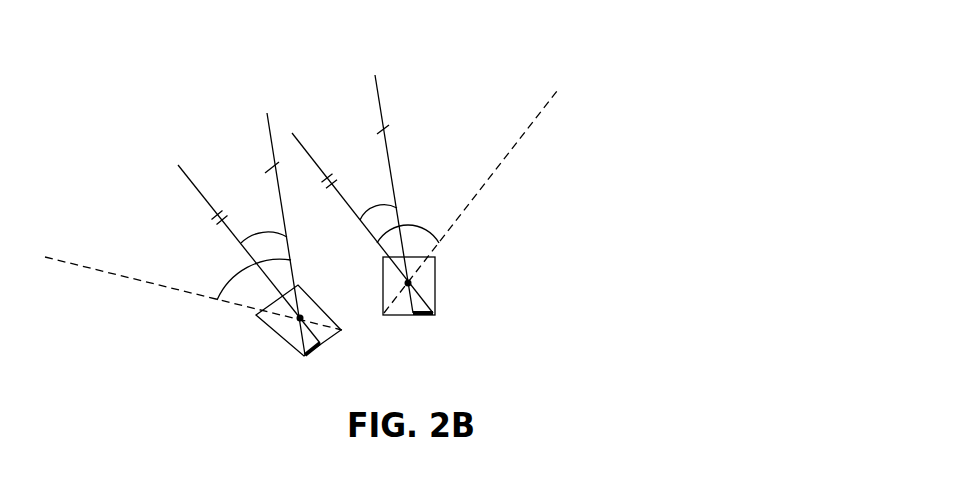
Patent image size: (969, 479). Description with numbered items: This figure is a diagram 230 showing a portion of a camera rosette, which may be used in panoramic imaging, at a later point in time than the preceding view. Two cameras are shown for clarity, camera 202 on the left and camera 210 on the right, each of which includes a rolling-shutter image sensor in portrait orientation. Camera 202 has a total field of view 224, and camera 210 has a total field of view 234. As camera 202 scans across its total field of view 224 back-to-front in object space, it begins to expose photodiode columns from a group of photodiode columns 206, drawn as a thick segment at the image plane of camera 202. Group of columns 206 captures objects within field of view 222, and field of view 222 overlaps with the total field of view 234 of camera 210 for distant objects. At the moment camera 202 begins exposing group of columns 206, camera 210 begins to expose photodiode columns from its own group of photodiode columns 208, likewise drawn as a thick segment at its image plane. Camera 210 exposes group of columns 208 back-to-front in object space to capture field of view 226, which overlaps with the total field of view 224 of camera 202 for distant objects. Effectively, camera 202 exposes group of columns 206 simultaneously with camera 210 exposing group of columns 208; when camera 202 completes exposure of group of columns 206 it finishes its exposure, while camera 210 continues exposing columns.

The camera 202 is at (280, 333).
The group of photodiode columns 206 is at (313, 349).
The group of photodiode columns 208 is at (429, 316).
The camera 210 is at (436, 277).
The field of view 222 is at (265, 233).
The total field of view 224 is at (232, 280).
The field of view 226 is at (380, 207).
The total field of view 234 is at (437, 243).
The diagram 230 is at (644, 38).